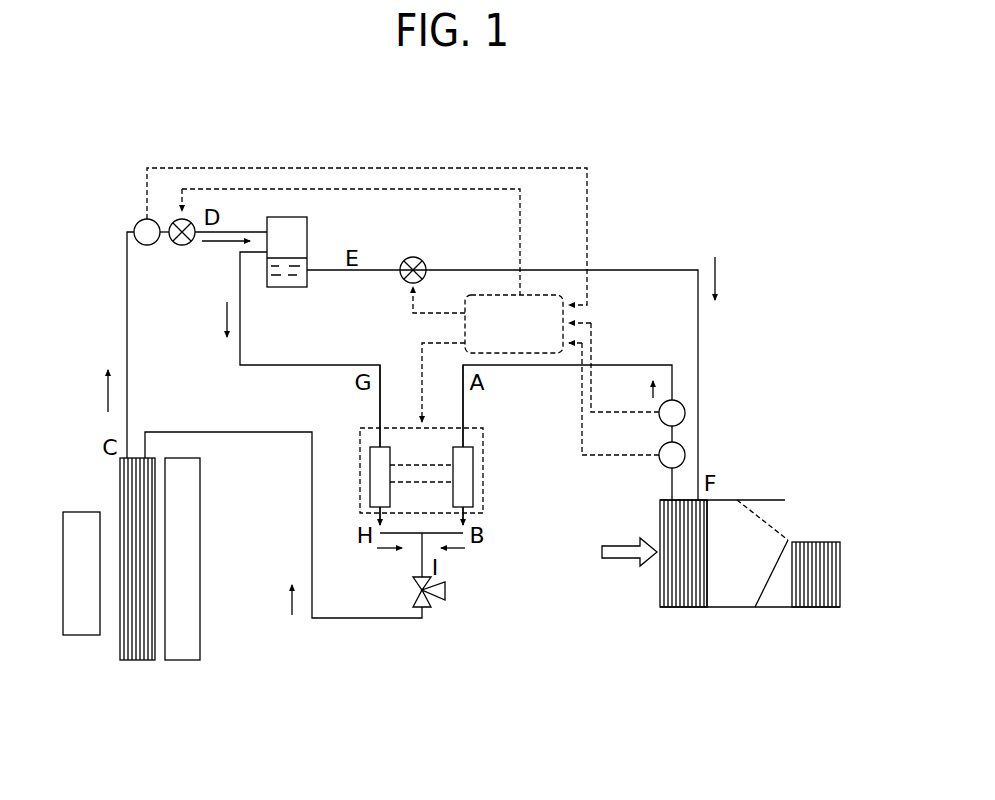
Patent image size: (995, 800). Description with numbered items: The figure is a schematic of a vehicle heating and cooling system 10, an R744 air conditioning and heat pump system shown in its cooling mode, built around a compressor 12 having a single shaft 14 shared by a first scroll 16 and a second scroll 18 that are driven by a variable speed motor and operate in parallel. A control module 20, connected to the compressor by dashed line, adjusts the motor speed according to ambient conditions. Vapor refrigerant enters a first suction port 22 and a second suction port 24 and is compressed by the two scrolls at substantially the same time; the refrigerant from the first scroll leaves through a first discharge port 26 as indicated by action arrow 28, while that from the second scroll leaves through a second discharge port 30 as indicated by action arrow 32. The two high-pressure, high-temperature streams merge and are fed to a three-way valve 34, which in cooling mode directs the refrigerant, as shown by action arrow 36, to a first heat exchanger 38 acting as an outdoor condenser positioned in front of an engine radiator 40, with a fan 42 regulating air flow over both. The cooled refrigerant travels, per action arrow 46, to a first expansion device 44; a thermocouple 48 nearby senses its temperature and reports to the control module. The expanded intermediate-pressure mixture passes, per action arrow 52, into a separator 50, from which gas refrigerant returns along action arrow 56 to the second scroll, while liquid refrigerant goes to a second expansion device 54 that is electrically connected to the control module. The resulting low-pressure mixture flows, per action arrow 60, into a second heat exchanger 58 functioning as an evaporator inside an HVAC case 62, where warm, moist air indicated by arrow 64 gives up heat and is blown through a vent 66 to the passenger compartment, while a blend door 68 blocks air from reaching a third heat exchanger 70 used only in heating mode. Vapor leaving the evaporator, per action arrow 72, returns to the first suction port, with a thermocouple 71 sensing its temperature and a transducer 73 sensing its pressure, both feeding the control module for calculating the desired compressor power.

The vehicle heating and cooling system 10 is at (754, 356).
The compressor 12 is at (483, 478).
The shaft 14 is at (400, 483).
The first scroll 16 is at (473, 497).
The second scroll 18 is at (370, 468).
The control module 20 is at (548, 295).
The first suction port 22 is at (468, 447).
The second suction port 24 is at (373, 447).
The first discharge port 26 is at (467, 512).
The action arrow 28 is at (455, 552).
The second discharge port 30 is at (373, 510).
The action arrow 32 is at (385, 548).
The three-way valve 34 is at (430, 600).
The action arrow 36 is at (288, 598).
The first heat exchanger 38 is at (120, 478).
The engine radiator 40 is at (200, 640).
The fan 42 is at (80, 635).
The first expansion device 44 is at (185, 245).
The action arrow 46 is at (100, 393).
The thermocouple 48 is at (135, 223).
The separator 50 is at (307, 232).
The action arrow 52 is at (222, 247).
The second expansion device 54 is at (425, 258).
The action arrow 56 is at (222, 320).
The second heat exchanger 58 is at (683, 607).
The action arrow 60 is at (720, 280).
The HVAC case 62 is at (772, 614).
The arrow 64 is at (620, 560).
The vent 66 is at (790, 518).
The blend door 68 is at (775, 565).
The third heat exchanger 70 is at (820, 542).
The thermocouple 71 is at (686, 455).
The action arrow 72 is at (648, 393).
The transducer 73 is at (686, 413).